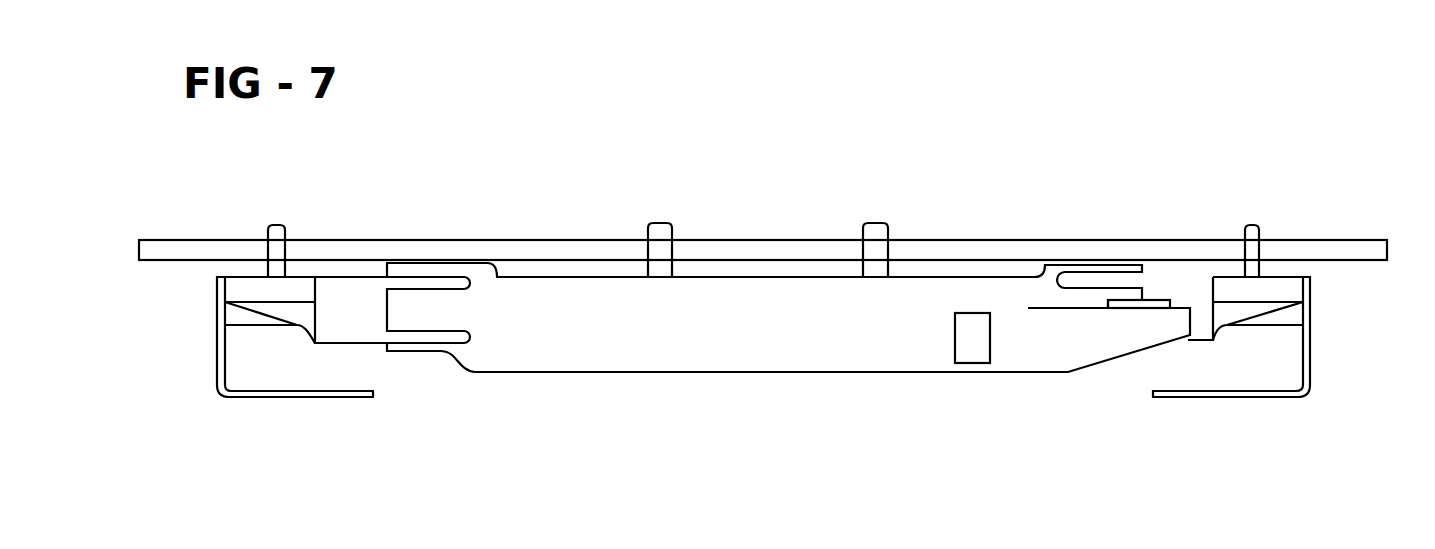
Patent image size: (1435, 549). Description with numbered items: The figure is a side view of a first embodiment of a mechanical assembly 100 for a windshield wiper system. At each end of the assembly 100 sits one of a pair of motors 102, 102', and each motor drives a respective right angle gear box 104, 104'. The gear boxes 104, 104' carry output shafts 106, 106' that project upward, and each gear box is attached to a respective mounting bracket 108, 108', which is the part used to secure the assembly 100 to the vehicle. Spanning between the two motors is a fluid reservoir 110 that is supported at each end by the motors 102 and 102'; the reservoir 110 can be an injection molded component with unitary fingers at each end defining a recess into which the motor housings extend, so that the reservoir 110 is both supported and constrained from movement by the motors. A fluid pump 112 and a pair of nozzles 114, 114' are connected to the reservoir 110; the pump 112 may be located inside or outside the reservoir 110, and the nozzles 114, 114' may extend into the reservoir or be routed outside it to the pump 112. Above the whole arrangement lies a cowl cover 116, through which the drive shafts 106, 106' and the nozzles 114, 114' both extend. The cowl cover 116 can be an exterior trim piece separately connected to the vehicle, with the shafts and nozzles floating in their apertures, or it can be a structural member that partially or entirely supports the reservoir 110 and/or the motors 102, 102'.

The mechanical assembly 100 is at (1074, 152).
The motor 102 is at (347, 250).
The motor 102' is at (1209, 252).
The right angle gear box 104 is at (221, 327).
The right angle gear box 104' is at (1317, 332).
The output shaft 106 is at (256, 211).
The output shaft 106' is at (1307, 222).
The mounting bracket 108 is at (323, 381).
The mounting bracket 108' is at (1273, 357).
The fluid reservoir 110 is at (1040, 362).
The fluid pump 112 is at (979, 357).
The nozzle 114 is at (621, 225).
The nozzle 114' is at (925, 202).
The cowl cover 116 is at (776, 240).